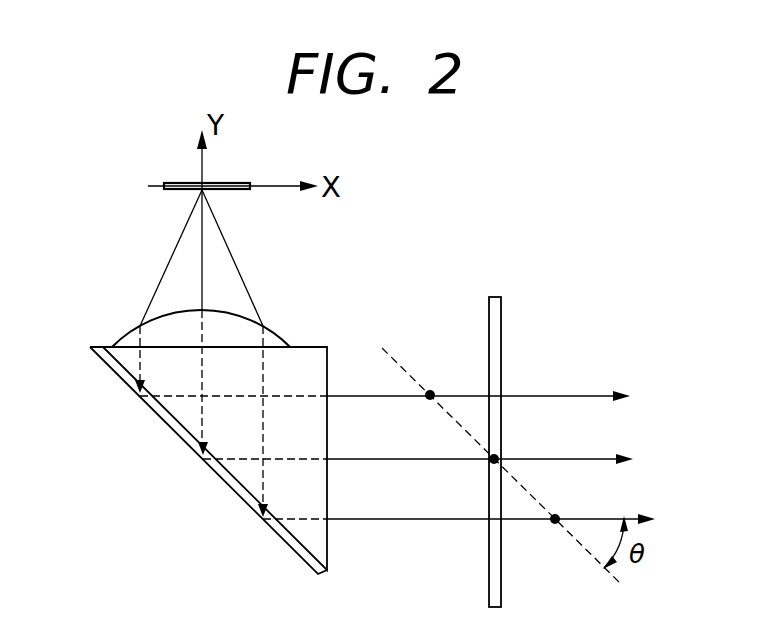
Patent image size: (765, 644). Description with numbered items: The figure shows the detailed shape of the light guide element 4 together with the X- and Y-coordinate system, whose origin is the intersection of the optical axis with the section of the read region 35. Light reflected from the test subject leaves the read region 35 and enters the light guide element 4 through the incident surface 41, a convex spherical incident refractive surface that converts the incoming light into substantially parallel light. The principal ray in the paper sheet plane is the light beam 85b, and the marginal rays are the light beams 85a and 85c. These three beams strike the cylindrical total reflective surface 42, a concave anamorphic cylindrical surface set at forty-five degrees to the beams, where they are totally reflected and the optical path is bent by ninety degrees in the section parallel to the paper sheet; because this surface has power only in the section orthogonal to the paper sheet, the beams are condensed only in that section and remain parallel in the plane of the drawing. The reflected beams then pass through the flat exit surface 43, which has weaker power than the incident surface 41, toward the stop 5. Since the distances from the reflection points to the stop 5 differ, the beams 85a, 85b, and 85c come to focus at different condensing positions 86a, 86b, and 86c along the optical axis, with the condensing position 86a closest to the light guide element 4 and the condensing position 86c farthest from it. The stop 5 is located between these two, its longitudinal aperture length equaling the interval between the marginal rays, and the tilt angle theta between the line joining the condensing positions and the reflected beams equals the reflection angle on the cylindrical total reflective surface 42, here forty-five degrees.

The read region 35 is at (173, 190).
The incident surface 41 is at (275, 330).
The exit surface 43 is at (330, 365).
The cylindrical total reflective surface 42 is at (225, 488).
The light guide element 4 is at (295, 505).
The marginal ray 85a is at (384, 398).
The principal ray 85b is at (420, 461).
The marginal ray 85c is at (383, 521).
The condensing position 86a is at (431, 390).
The condensing position 86b is at (501, 440).
The condensing position 86c is at (558, 516).
The stop 5 is at (488, 585).